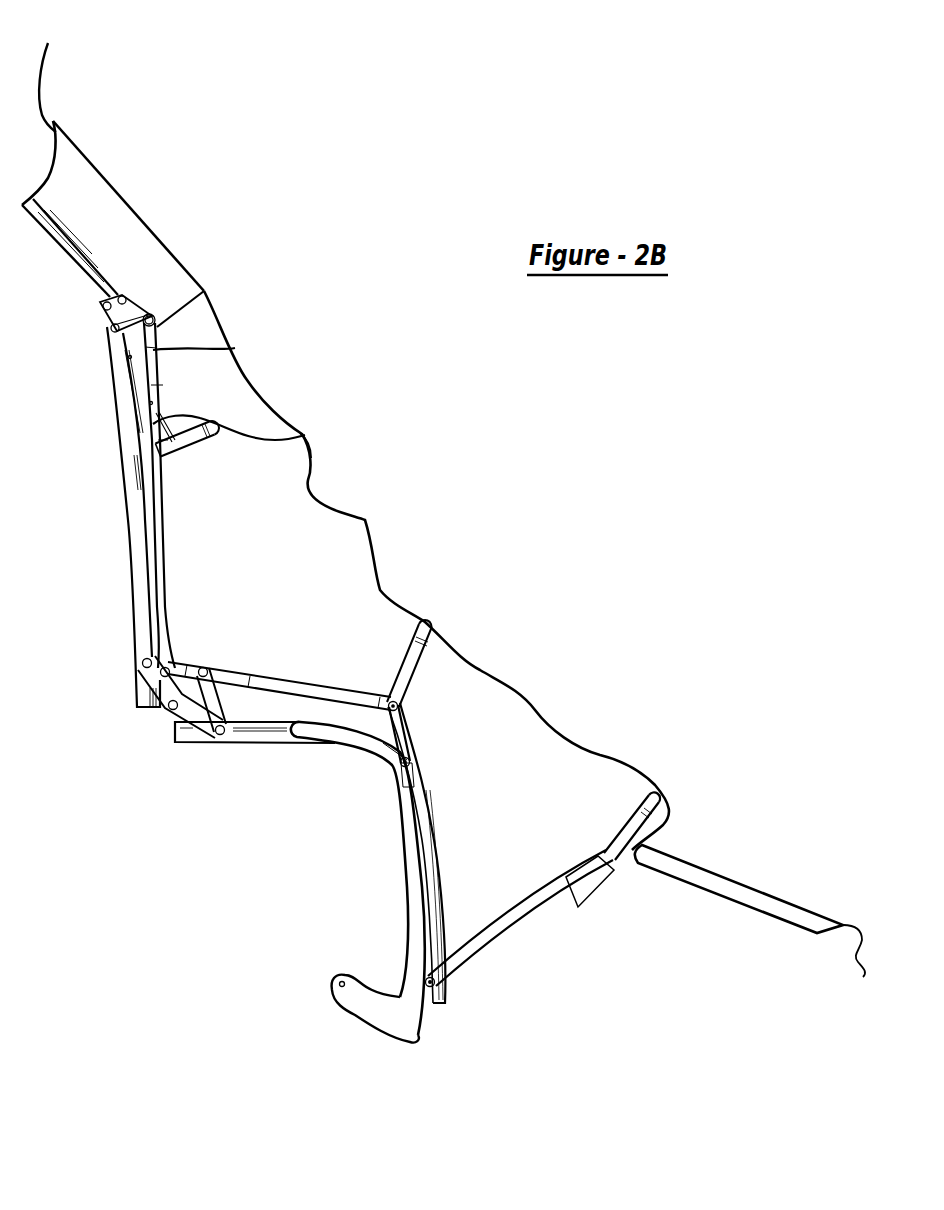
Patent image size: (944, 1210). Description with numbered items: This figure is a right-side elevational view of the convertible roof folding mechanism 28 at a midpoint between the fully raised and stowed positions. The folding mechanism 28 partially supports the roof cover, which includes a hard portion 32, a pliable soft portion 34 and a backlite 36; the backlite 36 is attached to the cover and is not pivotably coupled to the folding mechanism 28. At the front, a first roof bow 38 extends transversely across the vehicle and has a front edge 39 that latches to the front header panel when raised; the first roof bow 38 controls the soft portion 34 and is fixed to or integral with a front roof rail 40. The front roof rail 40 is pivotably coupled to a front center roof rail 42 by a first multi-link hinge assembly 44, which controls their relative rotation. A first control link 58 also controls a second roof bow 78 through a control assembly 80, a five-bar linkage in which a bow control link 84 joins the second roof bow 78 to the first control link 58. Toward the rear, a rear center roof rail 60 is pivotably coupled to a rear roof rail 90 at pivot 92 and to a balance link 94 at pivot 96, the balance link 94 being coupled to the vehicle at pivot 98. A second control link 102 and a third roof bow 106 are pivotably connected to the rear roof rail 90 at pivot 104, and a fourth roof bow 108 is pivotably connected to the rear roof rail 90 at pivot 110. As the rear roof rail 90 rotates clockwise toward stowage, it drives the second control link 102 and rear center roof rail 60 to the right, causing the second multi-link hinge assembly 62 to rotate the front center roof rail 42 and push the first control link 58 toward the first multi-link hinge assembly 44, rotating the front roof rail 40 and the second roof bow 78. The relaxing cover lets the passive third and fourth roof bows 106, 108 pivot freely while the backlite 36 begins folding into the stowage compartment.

The folding mechanism 28 is at (382, 161).
The hard portion 32 is at (75, 178).
The soft portion 34 is at (367, 522).
The backlite 36 is at (727, 887).
The first roof bow 38 is at (108, 207).
The front edge 39 is at (47, 70).
The front roof rail 40 is at (73, 264).
The front center roof rail 42 is at (133, 523).
The first multi-link hinge assembly 44 is at (160, 335).
The first control link 58 is at (152, 516).
The rear center roof rail 60 is at (255, 738).
The second multi-link hinge assembly 62 is at (207, 660).
The second roof bow 78 is at (195, 455).
The control assembly 80 is at (190, 403).
The bow control link 84 is at (305, 435).
The rear roof rail 90 is at (440, 837).
The pivot 92 is at (407, 763).
The balance link 94 is at (410, 880).
The pivot 96 is at (380, 758).
The pivot 98 is at (342, 990).
The second control link 102 is at (293, 690).
The pivot 104 is at (397, 713).
The third roof bow 106 is at (420, 657).
The fourth roof bow 108 is at (668, 813).
The pivot 110 is at (437, 982).